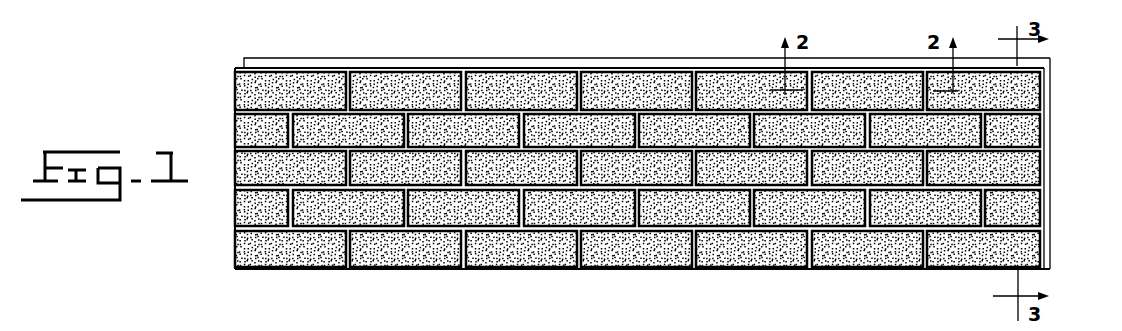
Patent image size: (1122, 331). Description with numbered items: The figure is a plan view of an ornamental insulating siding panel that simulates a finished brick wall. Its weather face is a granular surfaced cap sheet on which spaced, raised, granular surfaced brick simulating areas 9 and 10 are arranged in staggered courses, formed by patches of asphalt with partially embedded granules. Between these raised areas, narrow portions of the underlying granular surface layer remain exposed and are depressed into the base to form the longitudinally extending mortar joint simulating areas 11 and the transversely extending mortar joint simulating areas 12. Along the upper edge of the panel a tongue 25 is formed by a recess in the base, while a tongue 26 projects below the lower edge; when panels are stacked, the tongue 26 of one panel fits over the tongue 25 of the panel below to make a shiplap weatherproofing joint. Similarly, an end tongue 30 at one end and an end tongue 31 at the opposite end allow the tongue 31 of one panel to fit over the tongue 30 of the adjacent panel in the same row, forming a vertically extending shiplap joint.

The brick simulating area 9 is at (637, 169).
The brick simulating area 10 is at (637, 169).
The longitudinally extending mortar joint simulating area 11 is at (262, 104).
The transversely extending mortar joint simulating area 12 is at (686, 82).
The tongue 25 is at (429, 50).
The tongue 26 is at (710, 266).
The tongue 30 is at (1050, 212).
The tongue 31 is at (222, 234).